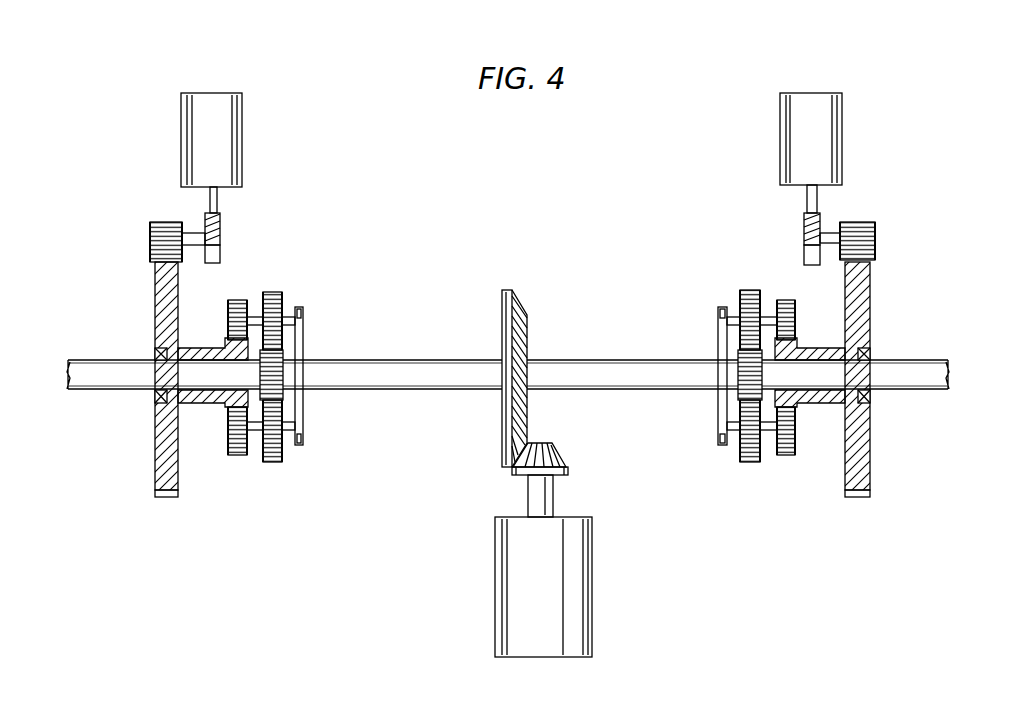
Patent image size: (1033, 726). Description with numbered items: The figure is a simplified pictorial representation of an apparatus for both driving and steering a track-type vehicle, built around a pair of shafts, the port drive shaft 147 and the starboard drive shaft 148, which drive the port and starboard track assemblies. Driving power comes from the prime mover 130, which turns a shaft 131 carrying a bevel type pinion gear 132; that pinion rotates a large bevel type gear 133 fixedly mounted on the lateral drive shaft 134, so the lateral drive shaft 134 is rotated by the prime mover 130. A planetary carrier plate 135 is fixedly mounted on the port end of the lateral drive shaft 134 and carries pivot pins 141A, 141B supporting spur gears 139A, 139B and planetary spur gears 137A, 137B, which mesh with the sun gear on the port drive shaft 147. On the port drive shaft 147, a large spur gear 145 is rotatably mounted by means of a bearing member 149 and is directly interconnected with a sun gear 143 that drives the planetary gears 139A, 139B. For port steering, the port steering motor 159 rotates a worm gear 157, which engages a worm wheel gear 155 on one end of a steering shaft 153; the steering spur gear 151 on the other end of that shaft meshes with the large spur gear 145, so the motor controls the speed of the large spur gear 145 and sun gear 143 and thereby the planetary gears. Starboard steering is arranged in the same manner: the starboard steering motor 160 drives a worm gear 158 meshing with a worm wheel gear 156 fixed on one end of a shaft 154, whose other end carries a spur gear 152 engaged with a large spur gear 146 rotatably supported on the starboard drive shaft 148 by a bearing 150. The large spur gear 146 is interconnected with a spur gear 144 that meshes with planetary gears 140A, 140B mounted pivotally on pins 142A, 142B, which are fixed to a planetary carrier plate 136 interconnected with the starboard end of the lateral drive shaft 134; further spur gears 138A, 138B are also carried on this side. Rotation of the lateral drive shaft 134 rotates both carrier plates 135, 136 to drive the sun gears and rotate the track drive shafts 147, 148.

The prime mover 130 is at (593, 600).
The shaft 131 is at (554, 497).
The bevel type pinion gear 132 is at (560, 455).
The large bevel type gear 133 is at (500, 437).
The lateral drive shaft 134 is at (587, 360).
The planetary carrier plate 135 is at (304, 345).
The planetary carrier plate 136 is at (717, 337).
The planetary spur gear 137A is at (283, 300).
The planetary spur gear 137B is at (283, 460).
The right upper gear 138A is at (739, 296).
The right lower gear 138B is at (739, 458).
The planetary gear 139A is at (227, 320).
The planetary gear 139B is at (236, 456).
The planetary gear 140A is at (812, 316).
The planetary gear 140B is at (789, 456).
The pin 141A is at (256, 316).
The pin 141B is at (254, 431).
The pin 142A is at (768, 316).
The pin 142B is at (769, 431).
The sun gear 143 is at (225, 410).
The spur gear 144 is at (800, 408).
The large spur gear 145 is at (164, 498).
The large spur gear 146 is at (865, 498).
The port drive shaft 147 is at (92, 359).
The starboard drive shaft 148 is at (906, 359).
The bearing member 149 is at (154, 398).
The bearing 150 is at (871, 397).
The steering spur gear 151 is at (149, 228).
The spur gear 152 is at (876, 236).
The steering shaft 153 is at (197, 232).
The shaft 154 is at (830, 232).
The worm wheel gear 155 is at (221, 262).
The worm wheel gear 156 is at (803, 258).
The worm gear 157 is at (221, 225).
The worm gear 158 is at (803, 222).
The port steering motor 159 is at (243, 108).
The starboard steering motor 160 is at (779, 116).